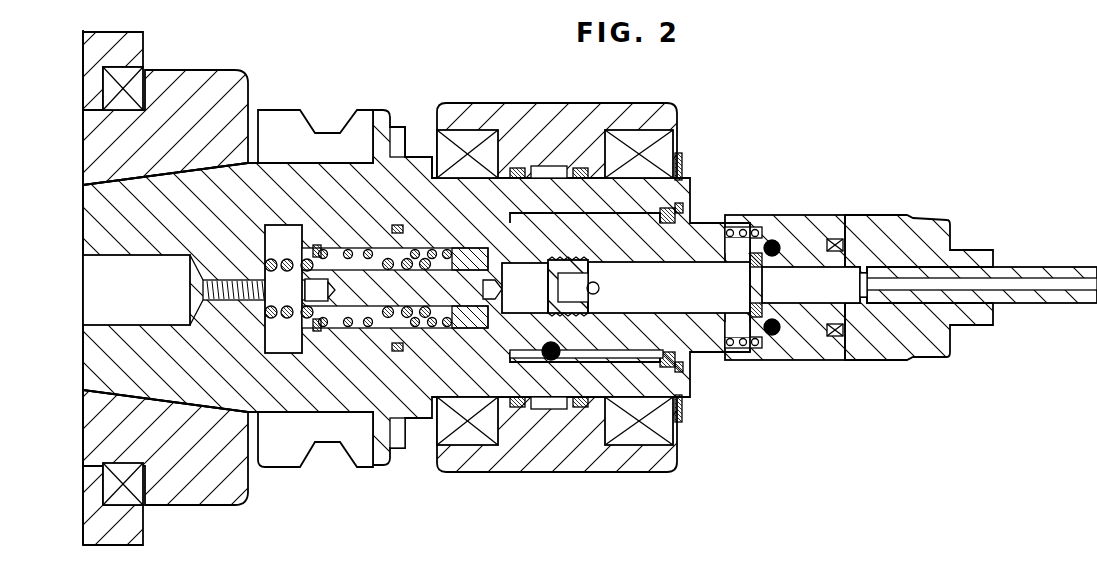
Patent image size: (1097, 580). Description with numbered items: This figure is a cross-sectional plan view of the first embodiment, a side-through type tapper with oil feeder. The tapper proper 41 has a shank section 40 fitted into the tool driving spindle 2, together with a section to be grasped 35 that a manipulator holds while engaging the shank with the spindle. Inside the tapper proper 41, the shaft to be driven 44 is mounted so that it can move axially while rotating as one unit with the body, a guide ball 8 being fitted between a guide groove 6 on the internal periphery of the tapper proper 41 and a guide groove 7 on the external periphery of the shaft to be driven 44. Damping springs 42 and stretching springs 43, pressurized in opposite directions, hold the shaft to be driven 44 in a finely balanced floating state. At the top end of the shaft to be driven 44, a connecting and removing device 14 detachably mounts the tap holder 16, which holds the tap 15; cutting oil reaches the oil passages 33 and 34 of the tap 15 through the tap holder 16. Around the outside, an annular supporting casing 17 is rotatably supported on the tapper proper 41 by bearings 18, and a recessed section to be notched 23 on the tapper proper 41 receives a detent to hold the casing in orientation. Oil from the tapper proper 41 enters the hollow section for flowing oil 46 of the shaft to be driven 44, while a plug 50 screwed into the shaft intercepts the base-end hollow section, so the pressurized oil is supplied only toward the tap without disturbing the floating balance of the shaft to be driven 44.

The tool driving spindle 2 is at (230, 92).
The shank section 40 is at (228, 172).
The section to be grasped 35 is at (312, 132).
The tapper proper 41 is at (398, 178).
The supporting casing 17 is at (497, 118).
The bearings 18 is at (633, 140).
The connecting and removing device 14 is at (802, 227).
The oil passage 33 is at (842, 278).
The tap holder 16 is at (913, 228).
The tap 15 is at (1060, 277).
The oil passage 34 is at (1075, 285).
The plug 50 is at (590, 264).
The guide ball 8 is at (550, 340).
The guide groove 7 is at (603, 350).
The guide groove 6 is at (615, 348).
The hollow section for flowing oil 46 is at (713, 295).
The damping springs 42 is at (287, 370).
The stretching springs 43 is at (345, 330).
The recessed section to be notched 23 is at (402, 447).
The shaft to be driven 44 is at (428, 370).